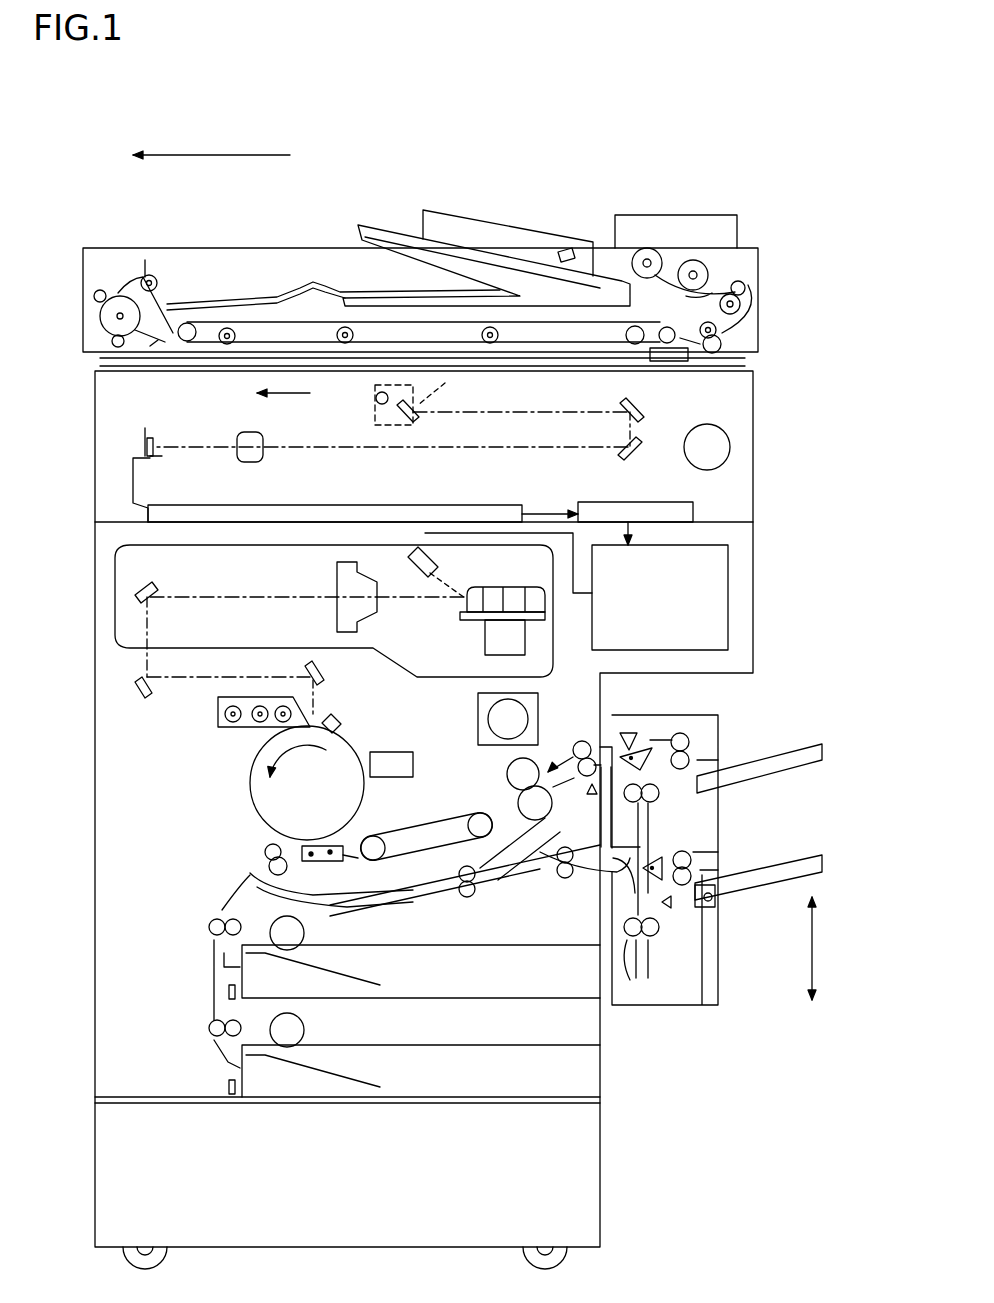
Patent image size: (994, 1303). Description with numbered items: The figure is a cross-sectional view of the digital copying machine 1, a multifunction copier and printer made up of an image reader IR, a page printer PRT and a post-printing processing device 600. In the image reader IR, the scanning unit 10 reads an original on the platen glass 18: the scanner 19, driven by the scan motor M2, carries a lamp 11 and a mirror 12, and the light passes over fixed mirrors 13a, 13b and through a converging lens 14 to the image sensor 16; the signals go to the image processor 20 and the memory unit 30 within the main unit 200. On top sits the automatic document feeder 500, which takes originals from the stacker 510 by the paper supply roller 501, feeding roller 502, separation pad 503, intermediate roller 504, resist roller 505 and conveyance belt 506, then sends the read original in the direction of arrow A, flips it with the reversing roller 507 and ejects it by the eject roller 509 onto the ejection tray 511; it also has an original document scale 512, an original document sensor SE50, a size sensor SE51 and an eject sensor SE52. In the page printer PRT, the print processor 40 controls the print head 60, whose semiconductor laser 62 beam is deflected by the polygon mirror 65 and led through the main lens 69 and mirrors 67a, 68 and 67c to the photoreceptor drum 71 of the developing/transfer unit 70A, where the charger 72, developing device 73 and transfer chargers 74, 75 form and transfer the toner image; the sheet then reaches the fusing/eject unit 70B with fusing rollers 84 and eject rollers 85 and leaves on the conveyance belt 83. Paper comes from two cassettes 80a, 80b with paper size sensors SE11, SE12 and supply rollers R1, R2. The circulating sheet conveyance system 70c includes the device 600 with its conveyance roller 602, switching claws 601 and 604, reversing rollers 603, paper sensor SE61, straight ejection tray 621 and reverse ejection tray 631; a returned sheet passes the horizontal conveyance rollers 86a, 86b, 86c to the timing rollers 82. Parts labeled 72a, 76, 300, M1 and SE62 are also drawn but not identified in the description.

The digital copying machine 1 is at (50, 152).
The arrow A is at (211, 137).
The scanning unit 10 is at (358, 437).
The lamp 11 is at (375, 396).
The mirror 12 is at (417, 415).
The fixed mirror 13a is at (640, 408).
The fixed mirror 13b is at (637, 456).
The converging lens 14 is at (265, 455).
The image sensor 16 is at (152, 434).
The platen glass 18 is at (517, 358).
The scanner 19 is at (449, 392).
The image processor 20 is at (452, 508).
The memory unit 30 is at (592, 502).
The print processor 40 is at (720, 575).
The print head 60 is at (285, 563).
The semiconductor laser 62 is at (420, 540).
The polygon mirror 65 is at (505, 600).
The mirror 67a is at (145, 585).
The mirror 67c is at (322, 670).
The mirror 68 is at (140, 683).
The main lens 69 is at (337, 616).
The developing/transfer unit 70A is at (200, 748).
The fusing/eject unit 70B is at (488, 799).
The circulating sheet conveyance system 70c is at (456, 937).
The photoreceptor drum 71 is at (307, 783).
The charger 72 is at (340, 714).
The mirror 72a is at (345, 724).
The developing device 73 is at (220, 700).
The transfer charger 74 is at (320, 862).
The transfer charger 75 is at (348, 858).
The developing unit 76 is at (415, 762).
The timing rollers 82 is at (268, 848).
The conveyance belt 83 is at (408, 833).
The pair of fusing rollers 84 is at (512, 828).
The pair of eject rollers 85 is at (576, 745).
The horizontal conveyance roller 86a is at (567, 878).
The horizontal conveyance roller 86b is at (470, 895).
The horizontal conveyance roller 86c is at (317, 932).
The paper cassette 80a is at (513, 958).
The paper cassette 80b is at (421, 1053).
The paper supply roller R1 is at (262, 905).
The paper supply roller R2 is at (280, 1027).
The paper size detection sensor SE11 is at (228, 991).
The paper size detection sensor SE12 is at (228, 1085).
The main unit 200 is at (855, 395).
The image reader IR is at (810, 464).
The page printer PRT is at (827, 651).
The main motor M1 is at (508, 719).
The scan motor M2 is at (707, 447).
The document tray unit 300 is at (697, 213).
The automatic document feeder 500 is at (288, 248).
The paper supply roller 501 is at (647, 247).
The feeding roller 502 is at (685, 258).
The separation pad 503 is at (710, 284).
The intermediate roller 504 is at (745, 283).
The resist roller 505 is at (722, 342).
The conveyance belt 506 is at (573, 353).
The reversing roller 507 is at (116, 294).
The eject roller 509 is at (153, 274).
The original document stacker 510 is at (477, 250).
The original document ejection tray 511 is at (231, 301).
The original document scale 512 is at (668, 364).
The original document sensor SE50 is at (565, 246).
The original document size sensor SE51 is at (750, 300).
The eject sensor SE52 is at (156, 342).
The post-printing processing device 600 is at (702, 1005).
The switching claw 601 is at (640, 750).
The conveyance roller 602 is at (663, 788).
The reversing rollers 603 is at (630, 1005).
The switching claw 604 is at (655, 857).
The straight ejection tray 621 is at (800, 747).
The reverse ejection tray 631 is at (790, 872).
The paper sensor SE61 is at (672, 903).
The discharge sensor SE62 is at (593, 795).